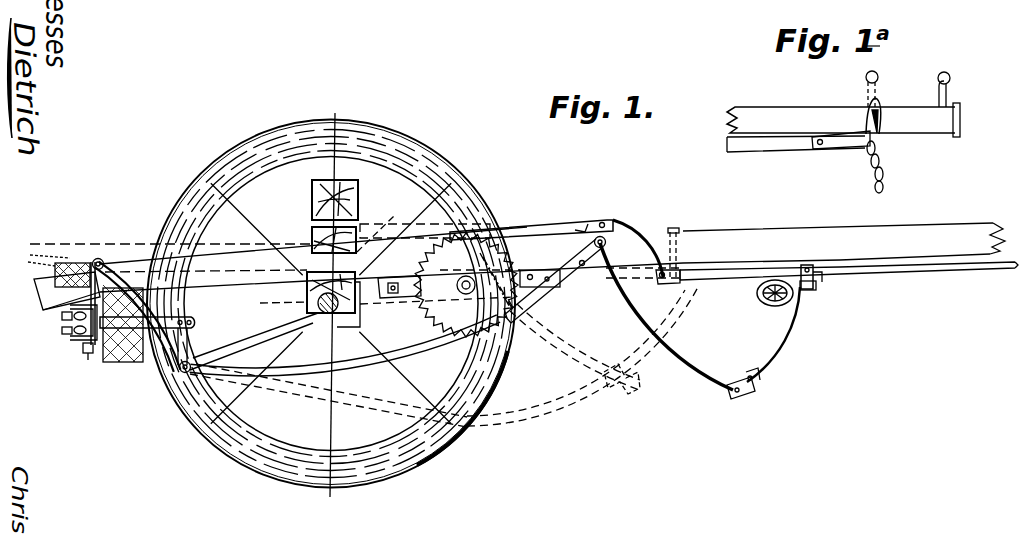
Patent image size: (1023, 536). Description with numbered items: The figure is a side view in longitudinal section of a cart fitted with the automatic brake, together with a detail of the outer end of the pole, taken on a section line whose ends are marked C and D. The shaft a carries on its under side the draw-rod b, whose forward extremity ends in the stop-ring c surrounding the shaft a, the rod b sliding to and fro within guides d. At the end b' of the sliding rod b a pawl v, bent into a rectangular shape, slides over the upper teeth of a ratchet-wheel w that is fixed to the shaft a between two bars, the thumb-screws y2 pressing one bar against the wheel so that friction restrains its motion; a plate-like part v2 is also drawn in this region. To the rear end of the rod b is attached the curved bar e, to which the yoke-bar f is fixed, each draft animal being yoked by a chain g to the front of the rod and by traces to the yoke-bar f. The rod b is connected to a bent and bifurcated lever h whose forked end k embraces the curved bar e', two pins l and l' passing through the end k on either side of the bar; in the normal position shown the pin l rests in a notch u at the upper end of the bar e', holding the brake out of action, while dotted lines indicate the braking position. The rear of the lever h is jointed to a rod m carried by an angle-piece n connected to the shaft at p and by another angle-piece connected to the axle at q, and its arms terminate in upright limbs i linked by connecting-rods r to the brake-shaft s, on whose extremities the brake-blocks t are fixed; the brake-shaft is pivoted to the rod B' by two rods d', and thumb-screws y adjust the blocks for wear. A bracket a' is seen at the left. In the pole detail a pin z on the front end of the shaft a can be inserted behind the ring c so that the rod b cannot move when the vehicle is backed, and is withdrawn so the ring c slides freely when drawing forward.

In FIG. 1, the shaft a is at (552, 257).
In FIG. 1A, the shaft a is at (843, 120).
In FIG. 1, the beam end block a' is at (67, 291).
In FIG. 1, the draw-rod b is at (849, 278).
In FIG. 1A, the draw-rod b is at (798, 150).
In FIG. 1, the end of the sliding rod b' is at (646, 248).
In FIG. 1, the rod B' is at (109, 289).
In FIG. 1, the section line C D C is at (340, 294).
In FIG. 1, the section line C D is at (331, 349).
In FIG. 1A, the stop-ring c is at (878, 108).
In FIG. 1, the guides d is at (822, 285).
In FIG. 1, the rods d' is at (386, 246).
In FIG. 1, the curved bar e is at (763, 343).
In FIG. 1, the curved bar e' is at (461, 335).
In FIG. 1, the yoke-bar f is at (762, 300).
In FIG. 1A, the chain g is at (882, 184).
In FIG. 1, the bent and bifurcated lever h is at (345, 345).
In FIG. 1, the upright limbs i is at (198, 318).
In FIG. 1, the forked end k is at (606, 246).
In FIG. 1, the pin l is at (555, 260).
In FIG. 1, the pin l' is at (540, 268).
In FIG. 1, the rod m is at (175, 378).
In FIG. 1, the angle-piece n is at (238, 348).
In FIG. 1, the connection point on shaft p is at (59, 269).
In FIG. 1, the connection point on axle q is at (342, 253).
In FIG. 1, the connecting-rods r is at (185, 214).
In FIG. 1, the brake-shaft s is at (83, 322).
In FIG. 1, the brake-blocks t is at (88, 355).
In FIG. 1, the notch u is at (585, 228).
In FIG. 1, the pawl v is at (500, 230).
In FIG. 1, the plate v2 is at (394, 283).
In FIG. 1, the ratchet-wheel w is at (466, 285).
In FIG. 1, the thumb-screws y is at (75, 320).
In FIG. 1, the thumb-screws y2 is at (548, 276).
In FIG. 1A, the pin z is at (878, 76).